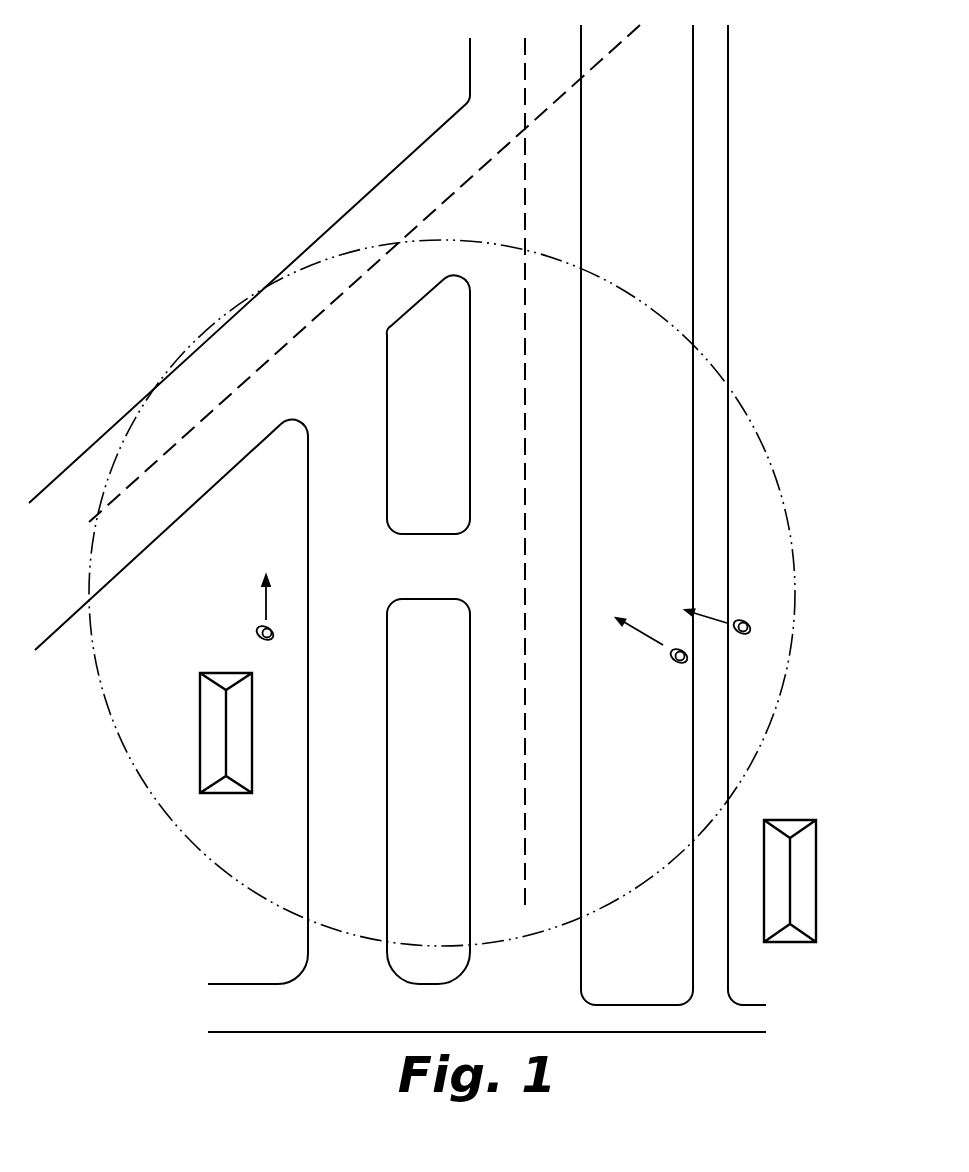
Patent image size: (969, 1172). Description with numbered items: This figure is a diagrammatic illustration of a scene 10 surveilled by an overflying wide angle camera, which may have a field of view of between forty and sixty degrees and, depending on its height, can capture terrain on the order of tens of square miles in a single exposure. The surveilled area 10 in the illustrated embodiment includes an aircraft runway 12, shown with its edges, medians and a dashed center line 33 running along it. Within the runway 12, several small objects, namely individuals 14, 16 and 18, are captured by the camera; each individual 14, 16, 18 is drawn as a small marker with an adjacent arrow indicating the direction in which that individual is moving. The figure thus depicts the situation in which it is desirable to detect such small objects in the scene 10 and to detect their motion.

The scene 10 is at (271, 127).
The aircraft runway 12 is at (434, 137).
The individual 14 is at (257, 634).
The individual 16 is at (672, 662).
The individual 18 is at (750, 633).
The lane center line 33 is at (528, 510).